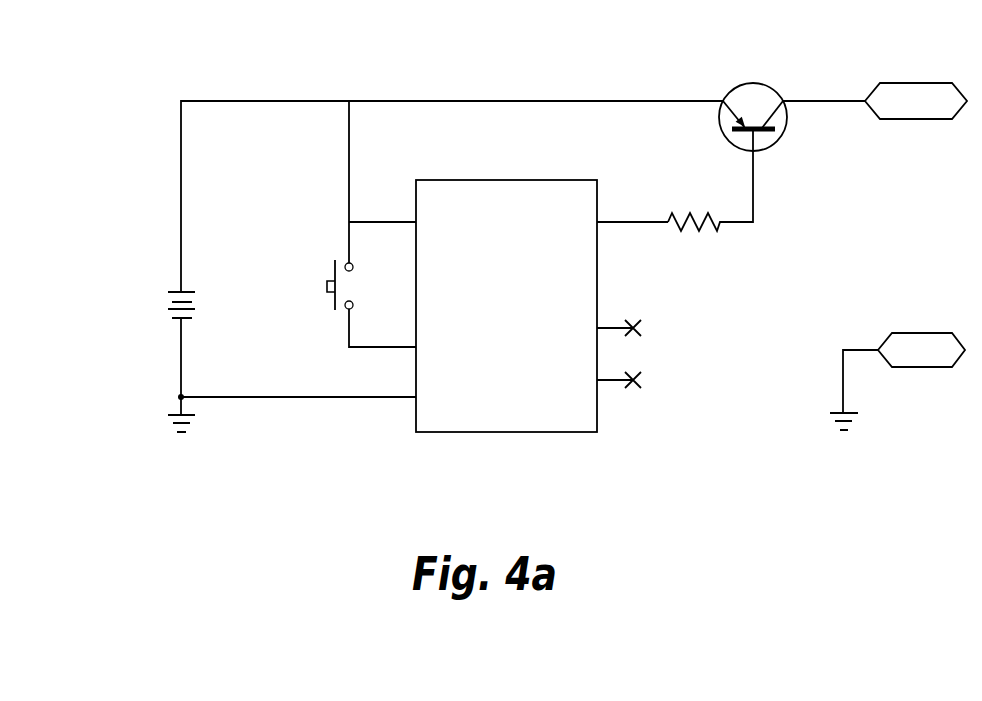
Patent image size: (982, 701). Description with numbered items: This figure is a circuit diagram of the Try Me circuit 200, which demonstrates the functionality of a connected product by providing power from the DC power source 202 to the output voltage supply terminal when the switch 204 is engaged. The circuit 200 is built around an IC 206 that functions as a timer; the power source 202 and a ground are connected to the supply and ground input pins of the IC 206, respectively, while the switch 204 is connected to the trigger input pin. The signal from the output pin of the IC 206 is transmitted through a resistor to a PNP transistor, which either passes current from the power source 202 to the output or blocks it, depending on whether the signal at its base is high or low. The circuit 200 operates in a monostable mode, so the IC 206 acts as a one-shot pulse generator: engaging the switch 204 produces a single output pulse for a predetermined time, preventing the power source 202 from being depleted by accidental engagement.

The Try Me circuit 200 is at (160, 138).
The DC power source 202 is at (143, 317).
The switch 204 is at (318, 253).
The IC 206 is at (555, 180).